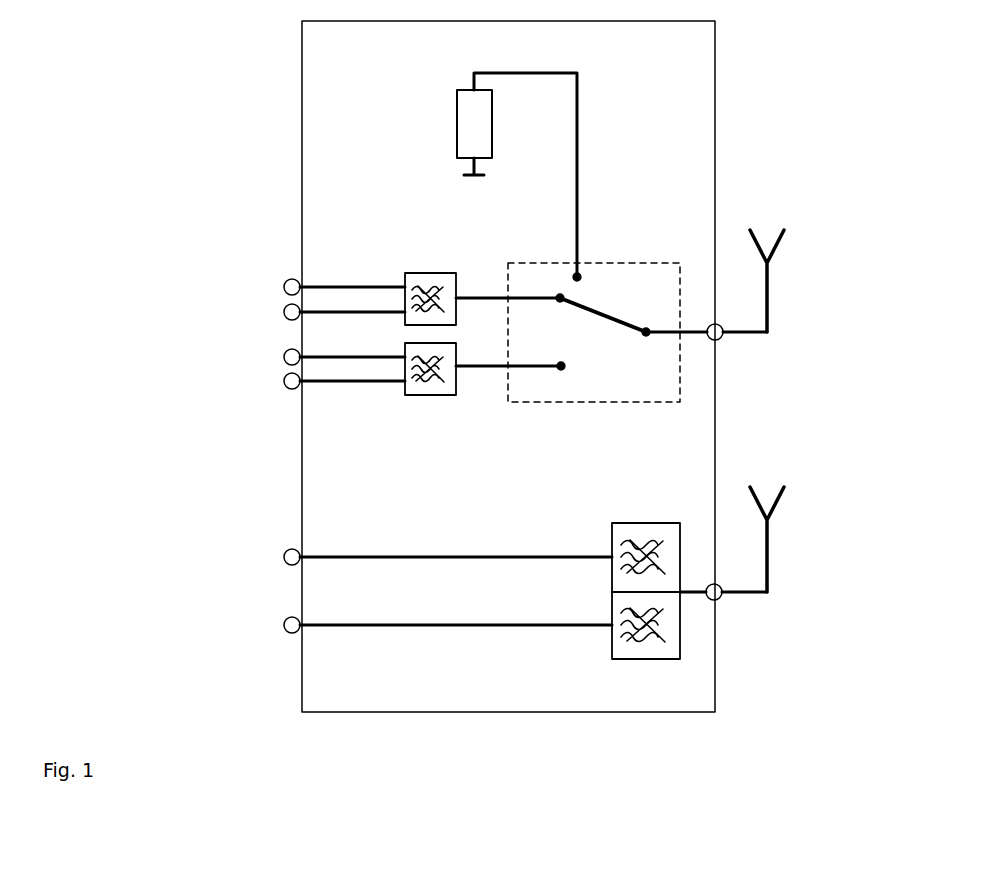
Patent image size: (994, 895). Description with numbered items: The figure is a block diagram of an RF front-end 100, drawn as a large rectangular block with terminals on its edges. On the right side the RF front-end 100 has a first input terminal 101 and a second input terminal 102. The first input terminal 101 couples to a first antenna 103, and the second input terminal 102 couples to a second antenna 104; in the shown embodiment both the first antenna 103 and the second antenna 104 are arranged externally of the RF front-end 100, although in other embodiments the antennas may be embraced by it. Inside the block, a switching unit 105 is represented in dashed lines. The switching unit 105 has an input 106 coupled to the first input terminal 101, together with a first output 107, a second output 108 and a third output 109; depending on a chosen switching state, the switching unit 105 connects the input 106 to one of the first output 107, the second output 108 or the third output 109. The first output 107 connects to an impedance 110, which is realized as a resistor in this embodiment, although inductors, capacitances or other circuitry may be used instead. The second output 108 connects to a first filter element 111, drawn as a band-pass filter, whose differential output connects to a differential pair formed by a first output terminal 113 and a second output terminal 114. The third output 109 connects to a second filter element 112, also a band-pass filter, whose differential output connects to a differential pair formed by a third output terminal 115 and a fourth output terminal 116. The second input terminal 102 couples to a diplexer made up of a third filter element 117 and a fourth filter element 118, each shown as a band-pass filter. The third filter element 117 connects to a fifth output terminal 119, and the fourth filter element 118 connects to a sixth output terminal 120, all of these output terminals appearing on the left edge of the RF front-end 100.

The RF front-end 100 is at (372, 68).
The first input terminal 101 is at (722, 338).
The second input terminal 102 is at (722, 598).
The first antenna 103 is at (762, 233).
The second antenna 104 is at (762, 492).
The switching unit 105 is at (657, 387).
The input 106 is at (645, 328).
The first output 107 is at (575, 274).
The second output 108 is at (559, 295).
The third output 109 is at (561, 369).
The impedance 110 is at (455, 128).
The first filter element 111 is at (407, 272).
The second filter element 112 is at (420, 397).
The first output terminal 113 is at (284, 285).
The second output terminal 114 is at (284, 310).
The third output terminal 115 is at (284, 355).
The fourth output terminal 116 is at (284, 379).
The third filter element 117 is at (650, 522).
The fourth filter element 118 is at (646, 660).
The fifth output terminal 119 is at (284, 555).
The sixth output terminal 120 is at (284, 623).